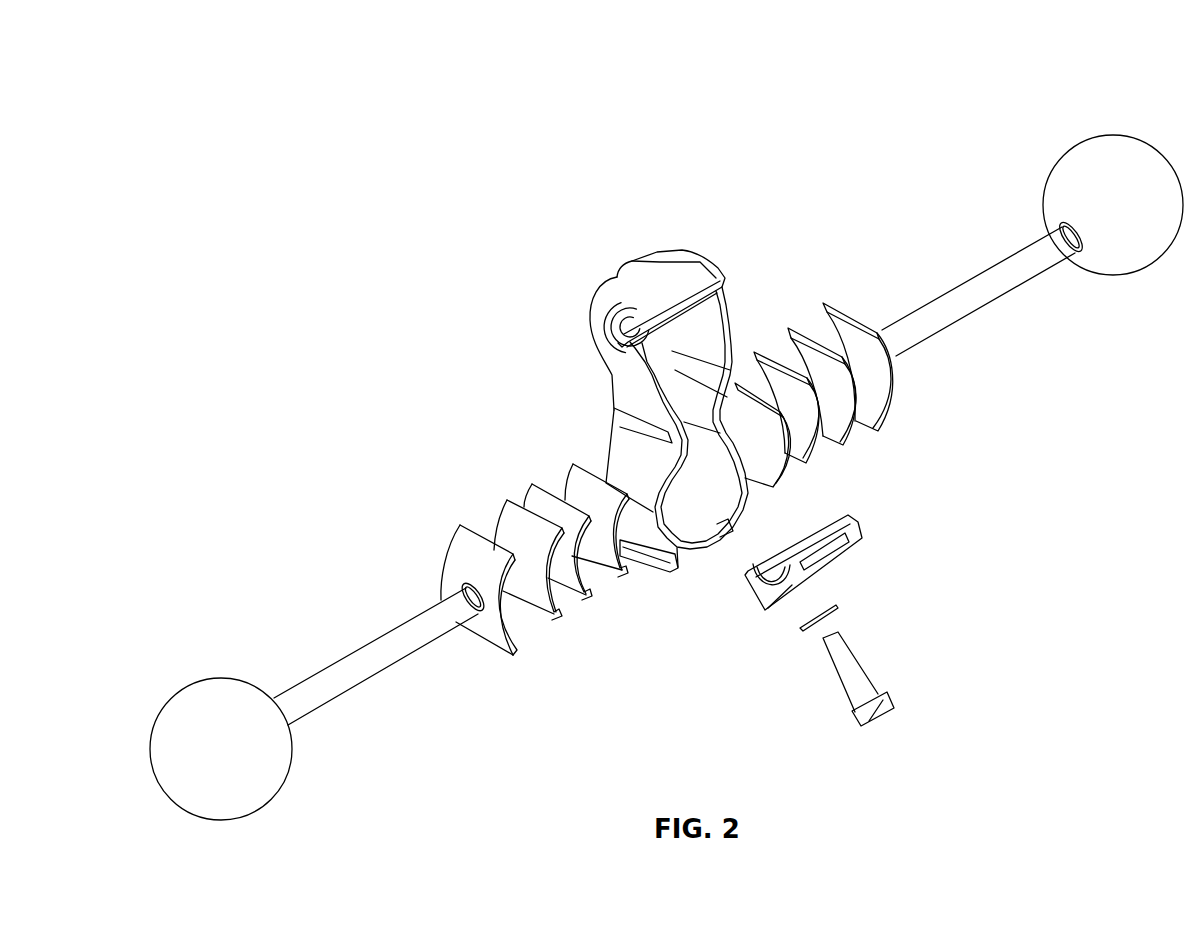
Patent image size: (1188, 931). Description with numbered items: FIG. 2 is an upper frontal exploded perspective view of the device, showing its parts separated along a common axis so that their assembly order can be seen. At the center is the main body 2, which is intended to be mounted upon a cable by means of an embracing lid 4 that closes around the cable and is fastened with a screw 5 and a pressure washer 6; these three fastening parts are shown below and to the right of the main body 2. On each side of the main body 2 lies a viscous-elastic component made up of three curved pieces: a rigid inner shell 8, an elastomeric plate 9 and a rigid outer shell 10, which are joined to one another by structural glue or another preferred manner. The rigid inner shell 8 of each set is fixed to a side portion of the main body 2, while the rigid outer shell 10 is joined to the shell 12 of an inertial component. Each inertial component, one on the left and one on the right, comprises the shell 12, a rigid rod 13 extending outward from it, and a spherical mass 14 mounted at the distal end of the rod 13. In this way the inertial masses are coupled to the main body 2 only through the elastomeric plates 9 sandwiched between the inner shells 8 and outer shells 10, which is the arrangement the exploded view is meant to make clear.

The main body 2 is at (608, 294).
The embracing lid 4 is at (858, 538).
The screw 5 is at (880, 708).
The pressure washer 6 is at (837, 605).
The rigid inner shell 8 is at (625, 573).
The elastomeric plate 9 is at (588, 602).
The rigid outer shell 10 is at (559, 620).
The shell 12 is at (851, 315).
The rigid rod 13 is at (1010, 257).
The spherical mass 14 is at (1092, 139).